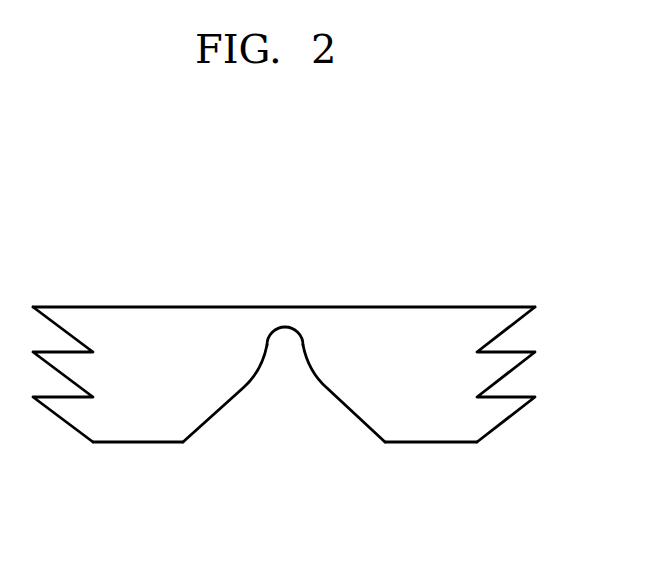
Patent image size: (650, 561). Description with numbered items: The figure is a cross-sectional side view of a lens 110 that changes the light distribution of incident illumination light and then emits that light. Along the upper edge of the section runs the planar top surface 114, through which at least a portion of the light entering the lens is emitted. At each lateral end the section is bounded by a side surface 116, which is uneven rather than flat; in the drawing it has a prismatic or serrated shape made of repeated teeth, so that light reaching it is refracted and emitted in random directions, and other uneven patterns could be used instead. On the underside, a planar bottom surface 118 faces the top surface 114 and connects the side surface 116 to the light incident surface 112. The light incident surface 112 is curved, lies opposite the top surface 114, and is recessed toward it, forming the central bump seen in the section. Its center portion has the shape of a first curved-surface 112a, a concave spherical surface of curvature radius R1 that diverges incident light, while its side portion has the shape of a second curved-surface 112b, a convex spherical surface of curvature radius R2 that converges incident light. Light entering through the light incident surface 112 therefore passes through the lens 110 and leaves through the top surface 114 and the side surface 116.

The lens 110 is at (313, 356).
The light incident surface 112 is at (284, 421).
The first curved-surface 112a is at (299, 337).
The second curved-surface 112b is at (225, 405).
The top surface 114 is at (463, 307).
The side surface 116 is at (515, 323).
The bottom surface 118 is at (430, 442).
The curvature radius of first curved-surface R1 is at (278, 333).
The curvature radius of second curved-surface R2 is at (230, 385).